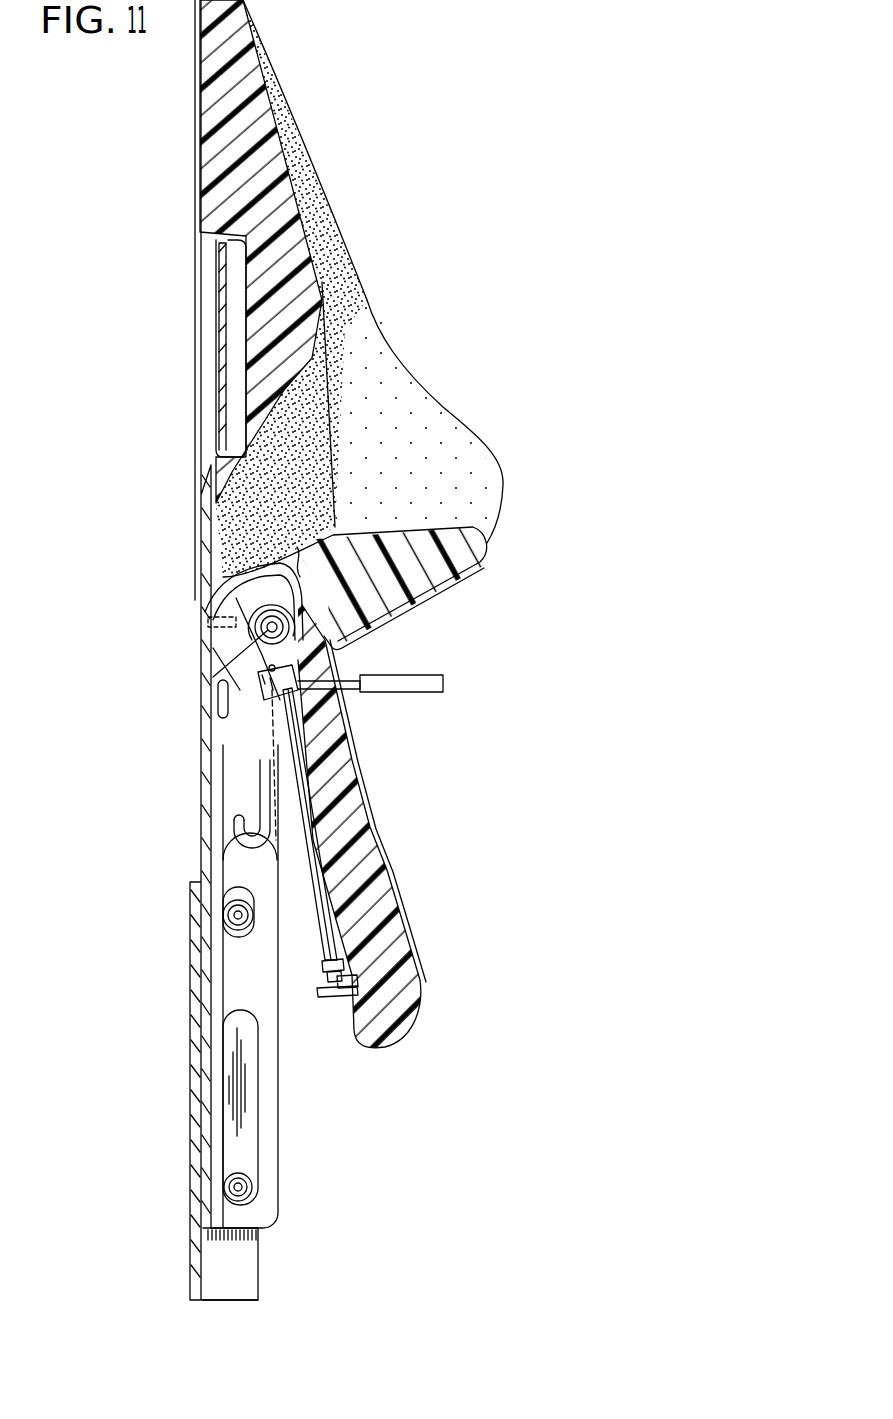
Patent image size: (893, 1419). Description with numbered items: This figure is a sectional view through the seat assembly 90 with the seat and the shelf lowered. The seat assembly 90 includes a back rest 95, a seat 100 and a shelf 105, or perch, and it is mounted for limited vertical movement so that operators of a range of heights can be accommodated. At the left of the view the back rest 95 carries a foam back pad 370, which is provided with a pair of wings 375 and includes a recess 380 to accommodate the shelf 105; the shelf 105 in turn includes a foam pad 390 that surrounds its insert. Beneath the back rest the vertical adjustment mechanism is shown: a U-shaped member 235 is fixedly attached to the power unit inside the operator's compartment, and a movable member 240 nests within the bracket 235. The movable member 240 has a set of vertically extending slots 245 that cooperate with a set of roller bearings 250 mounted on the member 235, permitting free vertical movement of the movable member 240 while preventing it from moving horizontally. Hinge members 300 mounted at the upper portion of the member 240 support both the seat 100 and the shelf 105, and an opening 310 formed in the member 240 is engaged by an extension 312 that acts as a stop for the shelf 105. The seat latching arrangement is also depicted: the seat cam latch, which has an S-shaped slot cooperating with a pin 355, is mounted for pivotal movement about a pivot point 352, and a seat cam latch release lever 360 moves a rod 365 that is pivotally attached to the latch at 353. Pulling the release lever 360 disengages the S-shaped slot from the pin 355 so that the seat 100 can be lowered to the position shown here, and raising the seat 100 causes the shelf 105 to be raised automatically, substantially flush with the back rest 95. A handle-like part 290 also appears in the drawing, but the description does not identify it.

The seat assembly 90 is at (505, 792).
The back rest 95 is at (206, 121).
The seat 100 is at (422, 994).
The shelf 105 is at (452, 578).
The U-shaped member 235 is at (248, 1280).
The movable member 240 is at (272, 1208).
The vertically extending slots 245 is at (250, 1128).
The roller bearings 250 is at (235, 916).
The handle rod 290 is at (412, 693).
The hinge members 300 is at (262, 630).
The opening 310 is at (213, 652).
The extension 312 is at (208, 622).
The pivot point 352 is at (245, 703).
The pivotal attachment of rod to latch 353 is at (287, 672).
The pin 355 is at (248, 763).
The seat cam latch release lever 360 is at (335, 1005).
The rod 365 is at (305, 840).
The foam back pad 370 is at (252, 55).
The wings 375 is at (485, 465).
The recess 380 is at (336, 407).
The foam pad 390 is at (475, 546).